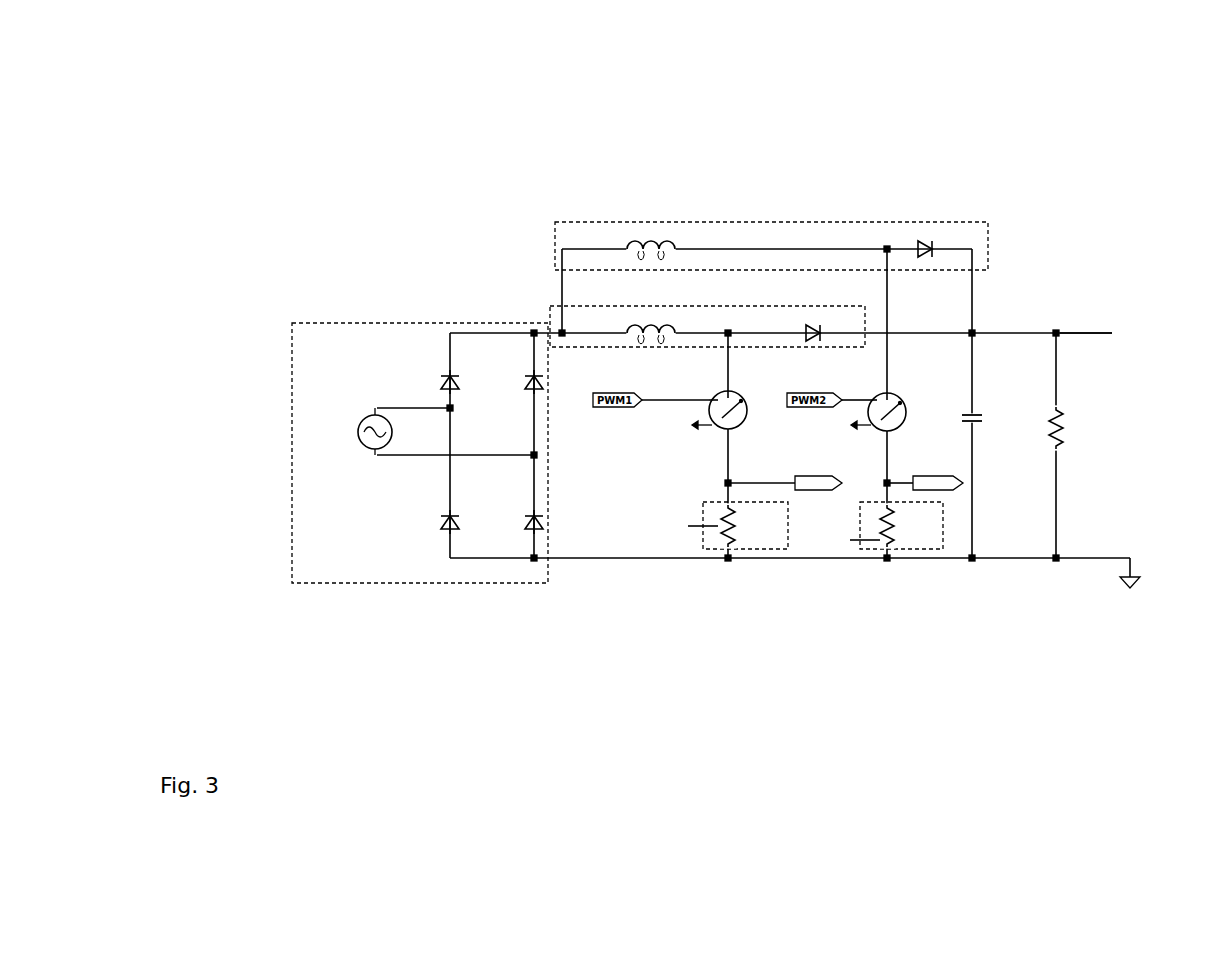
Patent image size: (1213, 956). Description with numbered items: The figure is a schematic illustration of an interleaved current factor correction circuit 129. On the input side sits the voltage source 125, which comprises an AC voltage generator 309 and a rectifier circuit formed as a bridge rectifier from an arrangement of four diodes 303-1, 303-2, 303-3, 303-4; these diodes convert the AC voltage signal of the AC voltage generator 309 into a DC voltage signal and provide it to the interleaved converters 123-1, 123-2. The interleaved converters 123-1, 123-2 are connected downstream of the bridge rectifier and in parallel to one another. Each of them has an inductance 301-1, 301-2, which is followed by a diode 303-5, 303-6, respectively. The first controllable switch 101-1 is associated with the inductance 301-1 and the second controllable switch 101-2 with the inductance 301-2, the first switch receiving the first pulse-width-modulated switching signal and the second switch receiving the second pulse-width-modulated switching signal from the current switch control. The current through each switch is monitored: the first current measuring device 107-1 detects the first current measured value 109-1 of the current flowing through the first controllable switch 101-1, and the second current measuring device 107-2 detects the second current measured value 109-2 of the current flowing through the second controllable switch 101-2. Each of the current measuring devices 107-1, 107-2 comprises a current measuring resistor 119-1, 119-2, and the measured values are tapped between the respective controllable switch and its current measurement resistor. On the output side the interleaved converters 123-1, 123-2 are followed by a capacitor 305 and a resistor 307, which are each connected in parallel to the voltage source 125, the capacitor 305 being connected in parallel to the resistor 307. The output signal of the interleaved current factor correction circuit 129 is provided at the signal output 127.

The interleaved current factor correction circuit 129 is at (330, 148).
The voltage source 125 is at (375, 322).
The AC voltage generator 309 is at (362, 418).
The diode 303-1 is at (440, 378).
The diode 303-2 is at (526, 378).
The diode 303-3 is at (440, 520).
The diode 303-4 is at (526, 520).
The interleaved converter 123-1 is at (550, 310).
The interleaved converter 123-2 is at (555, 262).
The inductance 301-1 is at (636, 239).
The inductance 301-2 is at (636, 323).
The diode 303-5 is at (915, 240).
The diode 303-6 is at (806, 323).
The first controllable switch 101-1 is at (716, 398).
The second controllable switch 101-2 is at (876, 398).
The first current measuring device 107-1 is at (720, 500).
The second current measuring device 107-2 is at (945, 522).
The first current measured value 109-1 is at (788, 471).
The second current measured value 109-2 is at (926, 471).
The current measuring resistor 119-1 is at (688, 526).
The current measuring resistor 119-2 is at (850, 540).
The capacitor 305 is at (966, 412).
The resistor 307 is at (1052, 418).
The signal output 127 is at (1113, 331).